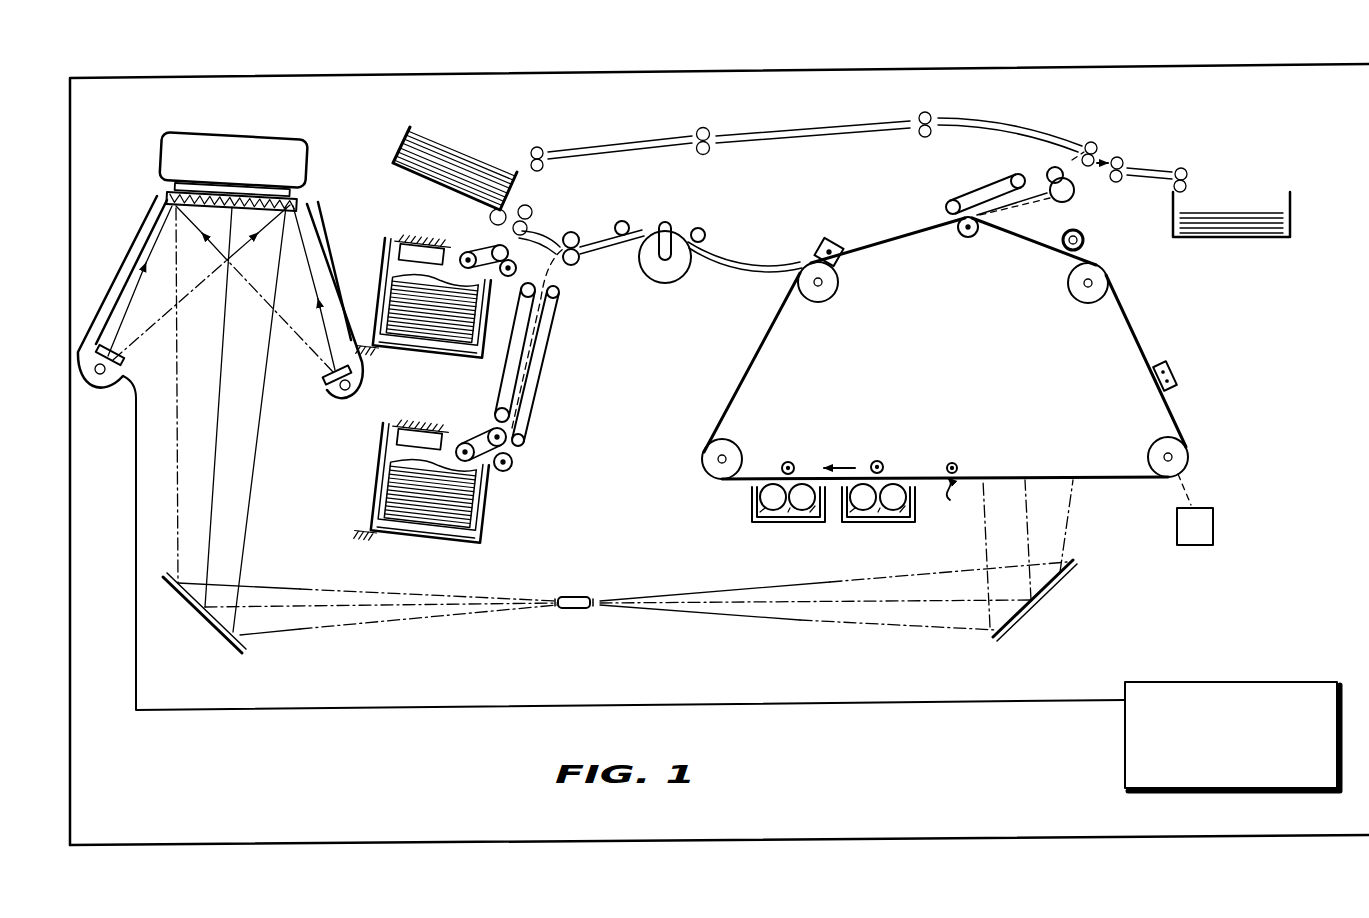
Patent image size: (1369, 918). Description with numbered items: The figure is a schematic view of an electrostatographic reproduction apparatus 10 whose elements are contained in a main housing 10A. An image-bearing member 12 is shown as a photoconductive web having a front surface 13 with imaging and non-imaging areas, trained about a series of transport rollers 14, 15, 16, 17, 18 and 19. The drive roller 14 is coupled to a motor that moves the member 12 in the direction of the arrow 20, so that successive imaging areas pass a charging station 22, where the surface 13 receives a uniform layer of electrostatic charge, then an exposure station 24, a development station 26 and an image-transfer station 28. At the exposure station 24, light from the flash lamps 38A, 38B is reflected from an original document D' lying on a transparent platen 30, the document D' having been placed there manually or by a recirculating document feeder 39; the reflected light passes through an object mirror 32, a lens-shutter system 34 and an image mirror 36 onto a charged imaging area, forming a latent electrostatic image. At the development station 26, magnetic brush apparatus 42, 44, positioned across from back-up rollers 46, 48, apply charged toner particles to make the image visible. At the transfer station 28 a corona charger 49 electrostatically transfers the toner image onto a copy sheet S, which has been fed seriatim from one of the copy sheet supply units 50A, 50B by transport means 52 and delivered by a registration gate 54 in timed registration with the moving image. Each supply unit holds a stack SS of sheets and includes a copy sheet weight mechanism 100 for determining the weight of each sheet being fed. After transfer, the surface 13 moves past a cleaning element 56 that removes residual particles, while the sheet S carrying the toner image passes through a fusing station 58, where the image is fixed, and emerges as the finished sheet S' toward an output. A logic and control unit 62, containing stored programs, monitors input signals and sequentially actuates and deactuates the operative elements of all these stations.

The reproduction apparatus 10 is at (572, 64).
The main housing 10A is at (1121, 66).
The recirculating document feeder 39 is at (250, 135).
The transparent platen 30 is at (172, 208).
The original document D' is at (257, 192).
The flash lamp 38A is at (100, 380).
The flash lamp 38B is at (334, 388).
The object mirror 32 is at (196, 610).
The lens-shutter system 34 is at (572, 596).
The image mirror 36 is at (1020, 614).
The image-bearing member 12 is at (1132, 310).
The image-transfer station 28 is at (881, 244).
The front surface 13 is at (1162, 340).
The drive roller 14 is at (1160, 436).
The transport roller 16 is at (731, 443).
The transport roller 17 is at (819, 303).
The transport roller 18 is at (966, 238).
The transport roller 19 is at (1074, 295).
The cleaning element 56 is at (1105, 204).
The corona charger 49 is at (818, 241).
The charging station 22 is at (1169, 366).
The registration gate 54 is at (688, 270).
The copy sheet S is at (691, 242).
The output copy sheet S' is at (1015, 190).
The fusing station 58 is at (1291, 192).
The back-up roller 48 is at (789, 462).
The back-up roller 46 is at (881, 462).
The transport roller 15 is at (953, 462).
The arrow 20 is at (845, 466).
The exposure station 24 is at (954, 503).
The magnetic brush apparatus 44 is at (781, 522).
The magnetic brush apparatus 42 is at (862, 522).
The development station 26 is at (756, 548).
The transport means 52 is at (542, 373).
The copy sheet supply unit 50B is at (473, 353).
The copy sheet supply unit 50A is at (487, 502).
The stack of sheets SS is at (398, 292).
The copy sheet weight mechanism 100 is at (477, 242).
The logic and control unit 62 is at (1125, 755).